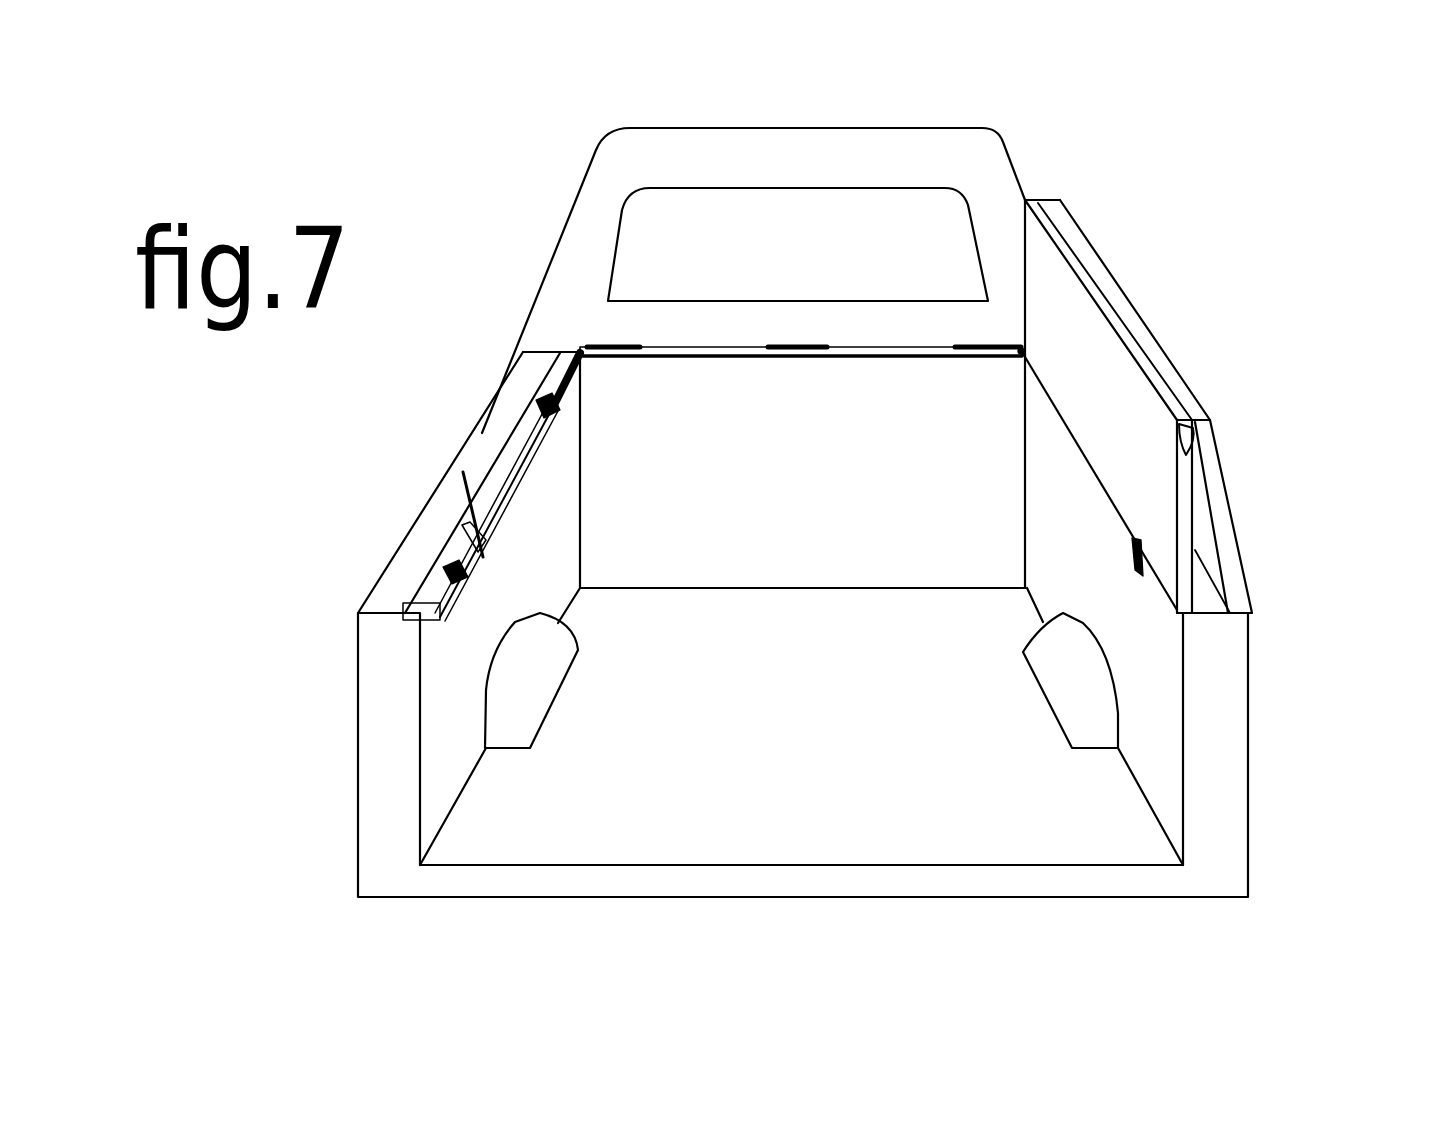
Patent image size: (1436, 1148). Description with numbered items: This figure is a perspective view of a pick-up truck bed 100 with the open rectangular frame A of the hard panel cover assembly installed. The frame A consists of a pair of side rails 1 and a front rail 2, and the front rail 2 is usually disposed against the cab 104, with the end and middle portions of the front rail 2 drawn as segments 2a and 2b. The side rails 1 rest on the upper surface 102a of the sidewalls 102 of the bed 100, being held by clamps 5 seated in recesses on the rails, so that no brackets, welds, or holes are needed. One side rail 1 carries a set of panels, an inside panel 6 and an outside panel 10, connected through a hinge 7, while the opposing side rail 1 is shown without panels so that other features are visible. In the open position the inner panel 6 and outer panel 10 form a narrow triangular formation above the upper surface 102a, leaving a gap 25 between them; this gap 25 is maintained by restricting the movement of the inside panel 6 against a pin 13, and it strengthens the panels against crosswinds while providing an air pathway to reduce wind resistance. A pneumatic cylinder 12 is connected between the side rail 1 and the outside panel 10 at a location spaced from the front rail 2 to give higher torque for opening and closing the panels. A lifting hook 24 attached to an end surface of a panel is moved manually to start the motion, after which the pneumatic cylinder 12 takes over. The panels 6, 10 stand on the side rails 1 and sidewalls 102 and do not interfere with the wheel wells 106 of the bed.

The cab 104 is at (912, 140).
The open rectangular frame A is at (667, 347).
The front rail 2 is at (742, 350).
The header bar end segment 2a is at (601, 343).
The header bar middle segment 2b is at (812, 343).
The pin 13 is at (1012, 358).
The inside panel 6 is at (1045, 281).
The pick-up truck bed 100 is at (1075, 478).
The hinge 7 is at (1163, 373).
The outside panel 10 is at (1225, 522).
The gap 25 is at (1208, 553).
The lifting hook 24 is at (1197, 425).
The upper surface of sidewall 102a is at (485, 437).
The sidewall 102 is at (1160, 670).
The wheel well 106 is at (537, 697).
The side rail 1 is at (428, 598).
The clamp 5 is at (560, 412).
The pneumatic cylinder 12 is at (477, 530).